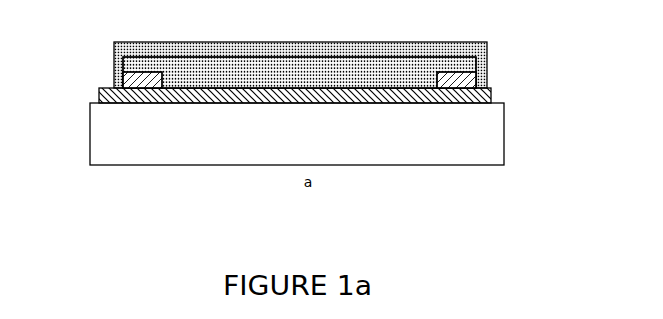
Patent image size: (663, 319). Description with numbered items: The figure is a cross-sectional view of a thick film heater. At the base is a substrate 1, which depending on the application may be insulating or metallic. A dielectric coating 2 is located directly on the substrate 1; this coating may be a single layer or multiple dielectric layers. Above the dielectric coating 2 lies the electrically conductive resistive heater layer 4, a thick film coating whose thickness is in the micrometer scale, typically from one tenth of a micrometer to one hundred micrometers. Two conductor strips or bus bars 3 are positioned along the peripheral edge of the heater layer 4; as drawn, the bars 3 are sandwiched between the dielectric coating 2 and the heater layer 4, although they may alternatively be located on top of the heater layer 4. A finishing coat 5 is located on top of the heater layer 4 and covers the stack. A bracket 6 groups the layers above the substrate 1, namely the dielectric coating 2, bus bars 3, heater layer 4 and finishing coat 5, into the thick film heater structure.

The substrate 1 is at (508, 132).
The dielectric coating 2 is at (496, 97).
The conductor strips/bus bars 3 is at (120, 79).
The electrically conductive resistive heater layer 4 is at (122, 63).
The finishing coat 5 is at (492, 53).
The layer stack 6 is at (290, 63).